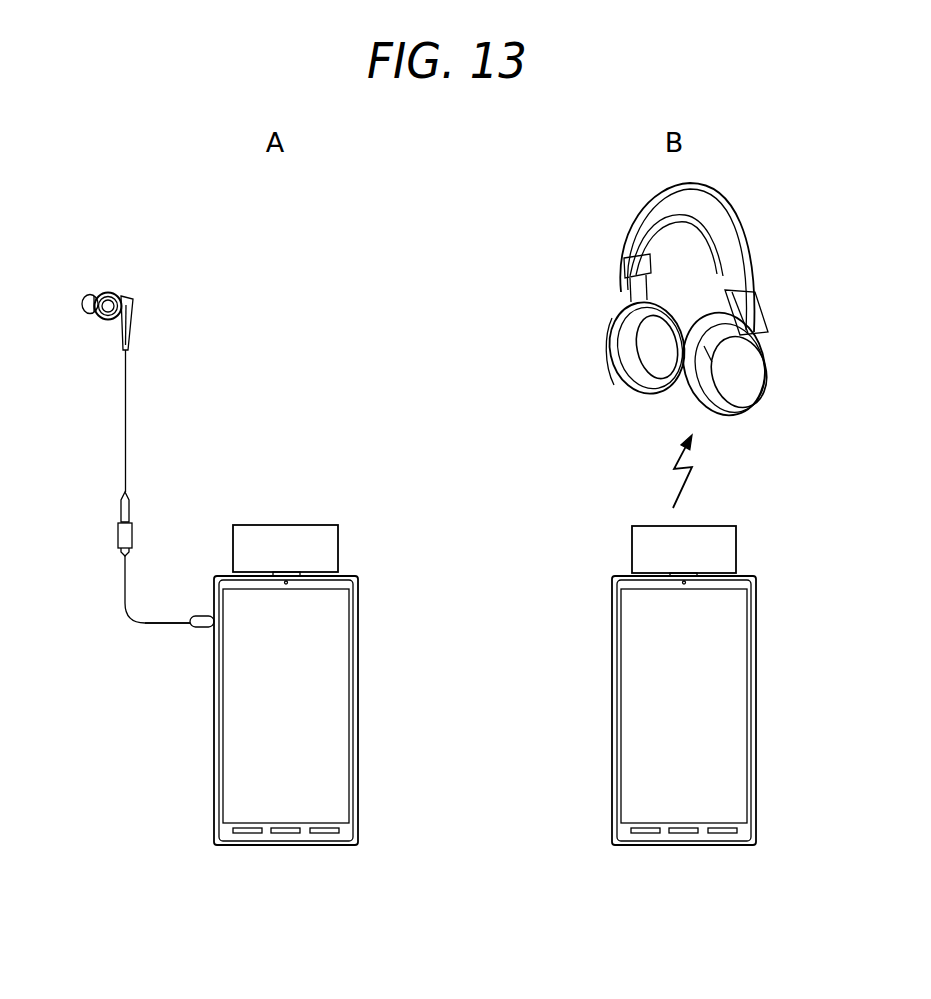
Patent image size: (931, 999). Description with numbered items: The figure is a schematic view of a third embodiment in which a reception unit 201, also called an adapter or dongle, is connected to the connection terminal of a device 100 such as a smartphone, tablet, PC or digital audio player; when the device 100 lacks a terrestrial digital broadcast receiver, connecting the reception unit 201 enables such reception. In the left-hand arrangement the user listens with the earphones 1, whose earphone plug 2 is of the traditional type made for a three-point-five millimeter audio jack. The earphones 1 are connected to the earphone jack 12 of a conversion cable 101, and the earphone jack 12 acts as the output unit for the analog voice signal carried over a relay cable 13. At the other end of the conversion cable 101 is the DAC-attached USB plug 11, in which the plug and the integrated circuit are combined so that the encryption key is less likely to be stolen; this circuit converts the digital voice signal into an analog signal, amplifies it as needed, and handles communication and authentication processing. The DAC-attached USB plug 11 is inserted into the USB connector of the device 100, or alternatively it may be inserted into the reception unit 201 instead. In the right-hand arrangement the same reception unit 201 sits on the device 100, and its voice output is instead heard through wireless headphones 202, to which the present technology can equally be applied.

The earphones 1 is at (133, 304).
The earphone plug 2 is at (131, 512).
The DAC-attached USB plug 11 is at (202, 631).
The earphone jack 12 is at (117, 540).
The relay cable 13 is at (150, 626).
The device 100 is at (212, 796).
The conversion cable 101 is at (120, 586).
The reception unit 201 is at (340, 550).
The wireless headphones 202 is at (755, 277).